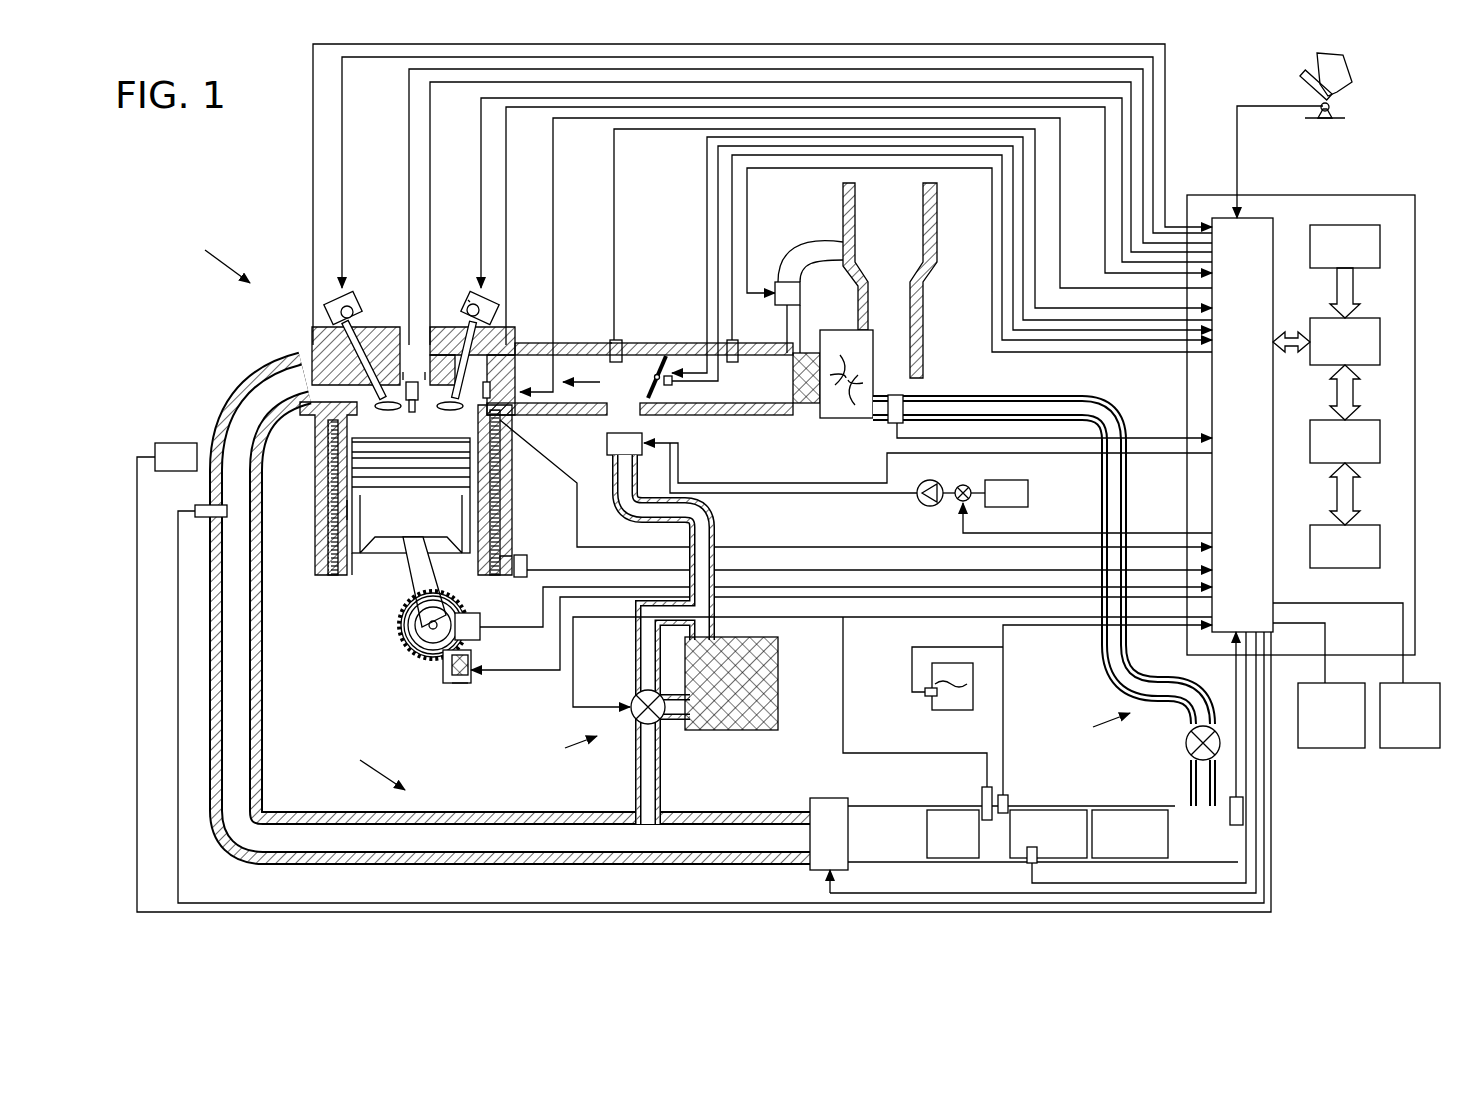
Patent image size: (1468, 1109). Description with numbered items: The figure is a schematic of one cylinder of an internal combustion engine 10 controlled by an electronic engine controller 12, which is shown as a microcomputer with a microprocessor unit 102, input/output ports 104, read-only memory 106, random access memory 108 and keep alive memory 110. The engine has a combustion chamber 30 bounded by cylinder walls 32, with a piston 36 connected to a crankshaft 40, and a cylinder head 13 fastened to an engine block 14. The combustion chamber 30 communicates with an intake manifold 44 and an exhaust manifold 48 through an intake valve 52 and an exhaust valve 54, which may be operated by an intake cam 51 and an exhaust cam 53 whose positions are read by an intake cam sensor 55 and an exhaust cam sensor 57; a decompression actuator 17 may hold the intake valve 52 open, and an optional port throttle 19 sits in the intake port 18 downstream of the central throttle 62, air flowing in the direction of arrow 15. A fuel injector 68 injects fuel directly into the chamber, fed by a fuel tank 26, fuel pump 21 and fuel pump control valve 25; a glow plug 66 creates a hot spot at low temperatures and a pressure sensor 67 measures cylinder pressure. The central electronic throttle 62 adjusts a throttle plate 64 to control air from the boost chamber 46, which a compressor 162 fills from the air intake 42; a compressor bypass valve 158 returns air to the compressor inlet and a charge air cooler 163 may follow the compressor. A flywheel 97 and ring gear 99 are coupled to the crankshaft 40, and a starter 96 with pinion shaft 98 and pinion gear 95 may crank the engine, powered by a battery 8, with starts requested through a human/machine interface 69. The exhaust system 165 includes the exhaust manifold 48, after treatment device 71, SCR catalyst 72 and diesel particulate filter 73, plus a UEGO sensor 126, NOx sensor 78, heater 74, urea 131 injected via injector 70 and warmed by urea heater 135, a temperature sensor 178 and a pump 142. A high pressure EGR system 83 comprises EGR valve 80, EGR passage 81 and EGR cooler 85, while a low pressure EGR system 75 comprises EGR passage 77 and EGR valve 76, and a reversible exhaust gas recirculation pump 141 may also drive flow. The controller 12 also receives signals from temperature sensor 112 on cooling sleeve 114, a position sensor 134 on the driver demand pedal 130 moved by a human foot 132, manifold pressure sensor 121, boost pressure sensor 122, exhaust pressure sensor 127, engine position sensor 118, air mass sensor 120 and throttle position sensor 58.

The battery 8 is at (1356, 675).
The internal combustion engine 10 is at (212, 256).
The electronic engine controller 12 is at (1392, 200).
The cylinder head 13 is at (495, 328).
The engine block 14 is at (320, 440).
The arrow 15 is at (592, 382).
The decompression actuator 17 is at (470, 310).
The intake port 18 is at (866, 262).
The port throttle 19 is at (491, 386).
The fuel pump 21 is at (936, 483).
The fuel pump control valve 25 is at (957, 505).
The fuel tank 26 is at (928, 475).
The combustion chamber 30 is at (322, 512).
The cylinder walls 32 is at (352, 575).
The piston 36 is at (400, 520).
The crankshaft 40 is at (415, 655).
The air intake 42 is at (890, 280).
The intake manifold 44 is at (640, 379).
The intake boost chamber 46 is at (732, 373).
The exhaust manifold 48 is at (525, 607).
The intake cam 51 is at (478, 298).
The intake valve 52 is at (418, 410).
The exhaust cam 53 is at (348, 303).
The exhaust valve 54 is at (355, 398).
The intake cam sensor 55 is at (490, 308).
The exhaust cam sensor 57 is at (338, 305).
The throttle position sensor 58 is at (673, 386).
The central electronic throttle 62 is at (640, 332).
The throttle plate 64 is at (659, 362).
The glow plug 66 is at (404, 384).
The pressure sensor 67 is at (426, 380).
The fuel injector 68 is at (500, 425).
The human/machine interface 69 is at (1319, 685).
The injector 70 is at (1008, 796).
The exhaust gas after treatment device 71 is at (953, 834).
The SCR catalyst 72 is at (1048, 834).
The diesel particulate filter 73 is at (1130, 834).
The heater 74 is at (983, 792).
The low pressure EGR system 75 is at (1094, 726).
The EGR valve 76 is at (1188, 740).
The EGR passage 77 is at (1102, 660).
The NOx sensor 78 is at (1236, 825).
The EGR valve 80 is at (636, 697).
The EGR passage 81 is at (625, 513).
The high pressure EGR system 83 is at (561, 747).
The EGR cooler 85 is at (778, 670).
The pinion gear 95 is at (462, 684).
The starter 96 is at (472, 676).
The flywheel 97 is at (405, 628).
The pinion shaft 98 is at (458, 676).
The ring gear 99 is at (430, 665).
The microprocessor unit 102 is at (1382, 342).
The input/output ports 104 is at (1260, 225).
The read-only memory 106 is at (1382, 246).
The random access memory 108 is at (1382, 442).
The keep alive memory 110 is at (1382, 546).
The temperature sensor 112 is at (540, 547).
The cooling sleeve 114 is at (330, 487).
The engine position sensor 118 is at (480, 616).
The air mass sensor 120 is at (903, 410).
The pressure sensor 121 is at (612, 340).
The pressure sensor 122 is at (738, 342).
The UEGO sensor 126 is at (155, 450).
The pressure sensor 127 is at (205, 505).
The driver demand pedal 130 is at (1312, 86).
The urea 131 is at (948, 700).
The human foot 132 is at (1352, 75).
The position sensor 134 is at (1345, 106).
The urea heater 135 is at (925, 693).
The reversible exhaust gas recirculation pump 141 is at (607, 443).
The pump in the exhaust system 142 is at (813, 798).
The compressor bypass valve 158 is at (780, 283).
The compressor 162 is at (838, 418).
The charge air cooler 163 is at (806, 403).
The exhaust system 165 is at (363, 763).
The temperature sensor 178 is at (1030, 863).